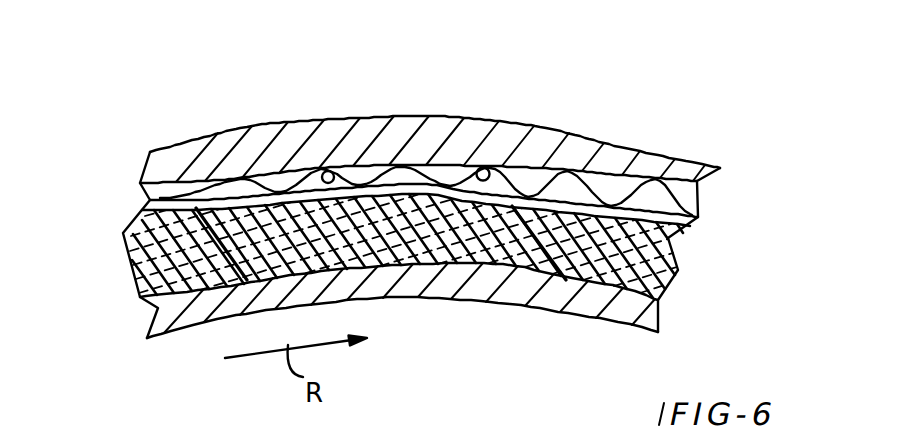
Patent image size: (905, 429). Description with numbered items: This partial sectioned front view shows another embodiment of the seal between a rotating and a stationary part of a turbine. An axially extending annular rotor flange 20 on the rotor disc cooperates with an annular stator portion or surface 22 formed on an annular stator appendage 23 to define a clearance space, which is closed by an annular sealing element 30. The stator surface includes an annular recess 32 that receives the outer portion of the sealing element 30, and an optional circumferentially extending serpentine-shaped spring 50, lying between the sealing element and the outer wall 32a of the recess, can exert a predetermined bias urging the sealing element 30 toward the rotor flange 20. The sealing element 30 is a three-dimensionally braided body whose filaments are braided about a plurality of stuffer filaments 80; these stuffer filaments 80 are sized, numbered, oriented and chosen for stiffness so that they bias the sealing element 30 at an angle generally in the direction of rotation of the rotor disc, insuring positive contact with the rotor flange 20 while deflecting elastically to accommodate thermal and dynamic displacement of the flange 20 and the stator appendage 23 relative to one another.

The annular rotor flange 20 is at (453, 288).
The annular stator portion 22 is at (135, 262).
The annular stator appendage 23 is at (385, 138).
The annular sealing element 30 is at (678, 270).
The annular recess 32 is at (606, 193).
The outer wall of the recess 32a is at (488, 168).
The serpentine-shaped spring 50 is at (327, 172).
The stuffer filaments 80 is at (219, 222).